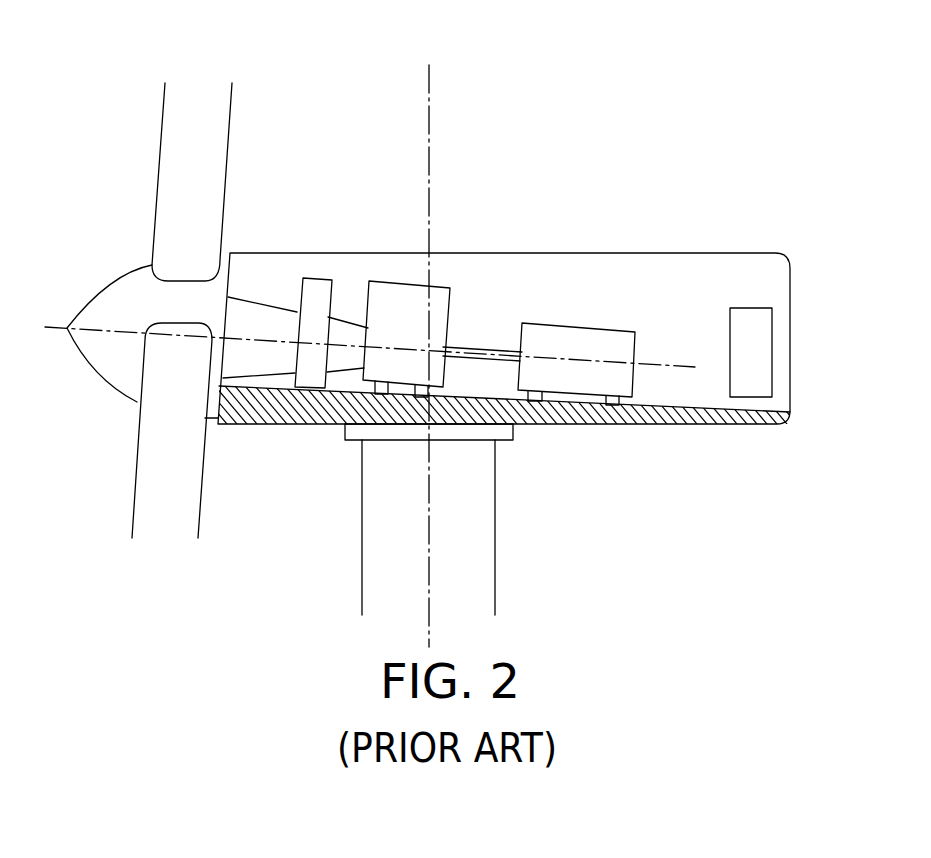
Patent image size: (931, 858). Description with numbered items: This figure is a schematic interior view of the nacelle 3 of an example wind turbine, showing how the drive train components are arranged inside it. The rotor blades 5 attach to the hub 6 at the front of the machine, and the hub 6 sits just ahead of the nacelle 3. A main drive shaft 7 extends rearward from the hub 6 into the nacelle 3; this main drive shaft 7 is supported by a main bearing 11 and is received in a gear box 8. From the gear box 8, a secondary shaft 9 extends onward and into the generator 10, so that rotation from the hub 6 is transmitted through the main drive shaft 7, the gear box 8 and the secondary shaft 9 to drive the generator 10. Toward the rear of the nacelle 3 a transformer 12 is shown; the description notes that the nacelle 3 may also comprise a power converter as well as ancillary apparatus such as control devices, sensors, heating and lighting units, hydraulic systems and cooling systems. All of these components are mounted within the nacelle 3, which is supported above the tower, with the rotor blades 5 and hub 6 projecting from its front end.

The nacelle 3 is at (566, 175).
The rotor blade 5 is at (162, 131).
The hub 6 is at (108, 285).
The main drive shaft 7 is at (268, 298).
The gear box 8 is at (394, 281).
The secondary shaft 9 is at (483, 348).
The generator 10 is at (612, 330).
The main bearing 11 is at (318, 278).
The transformer 12 is at (772, 318).